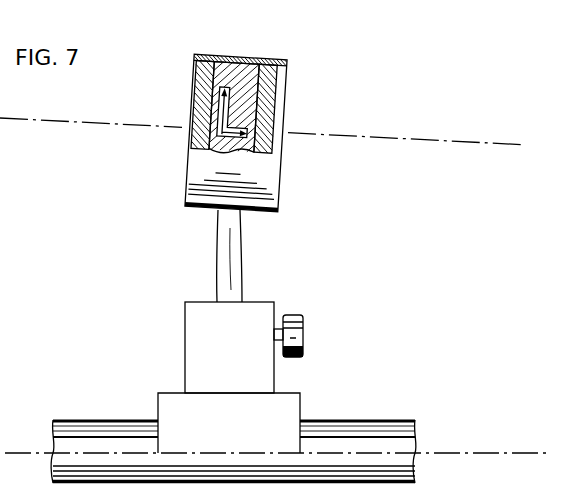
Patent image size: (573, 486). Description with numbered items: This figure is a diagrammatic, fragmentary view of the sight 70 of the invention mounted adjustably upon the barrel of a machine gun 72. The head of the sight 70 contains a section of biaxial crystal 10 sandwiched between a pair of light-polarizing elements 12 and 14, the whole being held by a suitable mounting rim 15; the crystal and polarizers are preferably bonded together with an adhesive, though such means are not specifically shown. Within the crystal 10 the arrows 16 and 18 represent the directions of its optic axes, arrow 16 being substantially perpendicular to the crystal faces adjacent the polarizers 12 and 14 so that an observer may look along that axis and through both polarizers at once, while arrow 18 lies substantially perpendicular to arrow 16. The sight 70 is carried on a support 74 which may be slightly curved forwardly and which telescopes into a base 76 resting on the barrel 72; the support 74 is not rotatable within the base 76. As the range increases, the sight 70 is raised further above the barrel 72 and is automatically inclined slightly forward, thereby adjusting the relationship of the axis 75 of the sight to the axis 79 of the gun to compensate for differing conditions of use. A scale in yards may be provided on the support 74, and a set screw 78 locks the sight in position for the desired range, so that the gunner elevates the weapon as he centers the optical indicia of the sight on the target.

The biaxial crystal 10 is at (253, 79).
The light-polarizing element 12 is at (203, 82).
The light-polarizing element 14 is at (270, 113).
The mounting rim 15 is at (246, 61).
The optic axis direction arrow 16 is at (213, 136).
The optic axis direction arrow 18 is at (222, 109).
The sight 70 is at (288, 182).
The machine gun barrel 72 is at (350, 421).
The support 74 is at (232, 259).
The axis of the sight 75 is at (436, 146).
The base 76 is at (190, 327).
The set screw 78 is at (293, 333).
The axis of the gun 79 is at (477, 452).